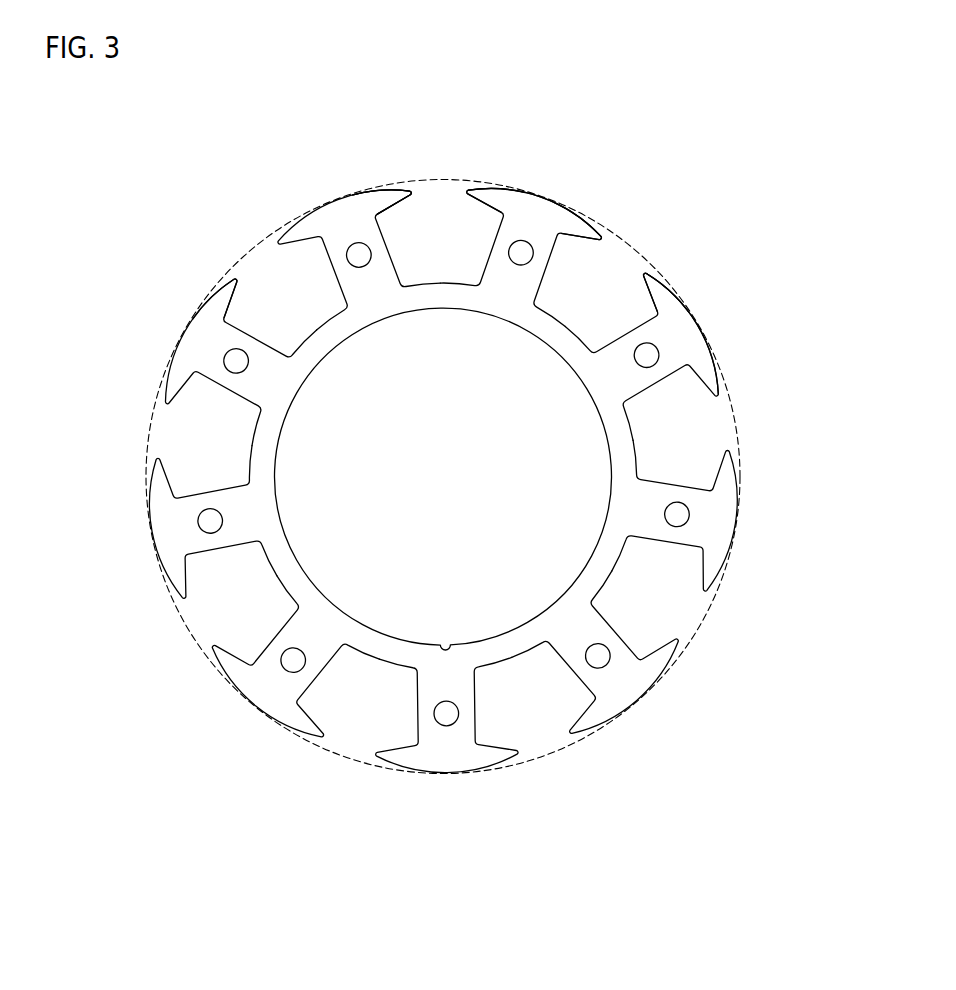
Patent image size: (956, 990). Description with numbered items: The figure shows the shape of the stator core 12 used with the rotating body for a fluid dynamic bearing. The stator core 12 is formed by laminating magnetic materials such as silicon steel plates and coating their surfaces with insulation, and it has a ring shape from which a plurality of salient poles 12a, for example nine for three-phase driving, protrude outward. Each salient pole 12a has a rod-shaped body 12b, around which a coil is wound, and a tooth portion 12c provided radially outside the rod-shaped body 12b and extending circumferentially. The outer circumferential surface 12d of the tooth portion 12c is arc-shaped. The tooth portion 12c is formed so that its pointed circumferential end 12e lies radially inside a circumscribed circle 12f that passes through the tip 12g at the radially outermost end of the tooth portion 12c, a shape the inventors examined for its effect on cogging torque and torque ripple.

The stator core 12 is at (460, 881).
The salient pole 12a is at (712, 293).
The rod-shaped body 12b is at (343, 270).
The tooth portion 12c is at (382, 202).
The outer circumferential surface 12d is at (283, 235).
The circumferential end 12e is at (453, 192).
The circumscribed circle 12f is at (733, 410).
The tip 12g is at (543, 195).